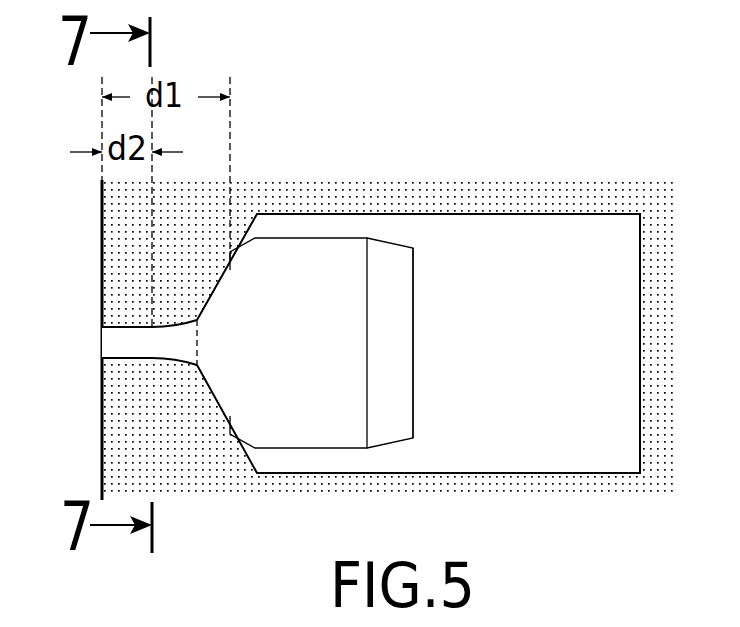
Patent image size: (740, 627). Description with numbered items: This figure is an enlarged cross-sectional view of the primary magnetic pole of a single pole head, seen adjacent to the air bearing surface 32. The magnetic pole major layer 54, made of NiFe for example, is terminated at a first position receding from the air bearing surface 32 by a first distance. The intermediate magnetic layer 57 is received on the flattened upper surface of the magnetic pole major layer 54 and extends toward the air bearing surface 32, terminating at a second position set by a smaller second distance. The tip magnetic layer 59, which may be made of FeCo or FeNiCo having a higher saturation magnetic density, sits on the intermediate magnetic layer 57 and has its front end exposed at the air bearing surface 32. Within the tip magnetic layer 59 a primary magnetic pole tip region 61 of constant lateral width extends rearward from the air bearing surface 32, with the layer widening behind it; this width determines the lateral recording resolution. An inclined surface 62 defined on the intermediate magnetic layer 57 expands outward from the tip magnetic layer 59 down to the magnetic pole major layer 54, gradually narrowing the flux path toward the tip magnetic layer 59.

The air bearing surface 32 is at (102, 492).
The magnetic pole major layer 54 is at (295, 473).
The intermediate magnetic layer 57 is at (413, 397).
The tip magnetic layer 59 is at (300, 240).
The primary magnetic pole tip region 61 is at (108, 341).
The inclined surface 62 is at (409, 283).